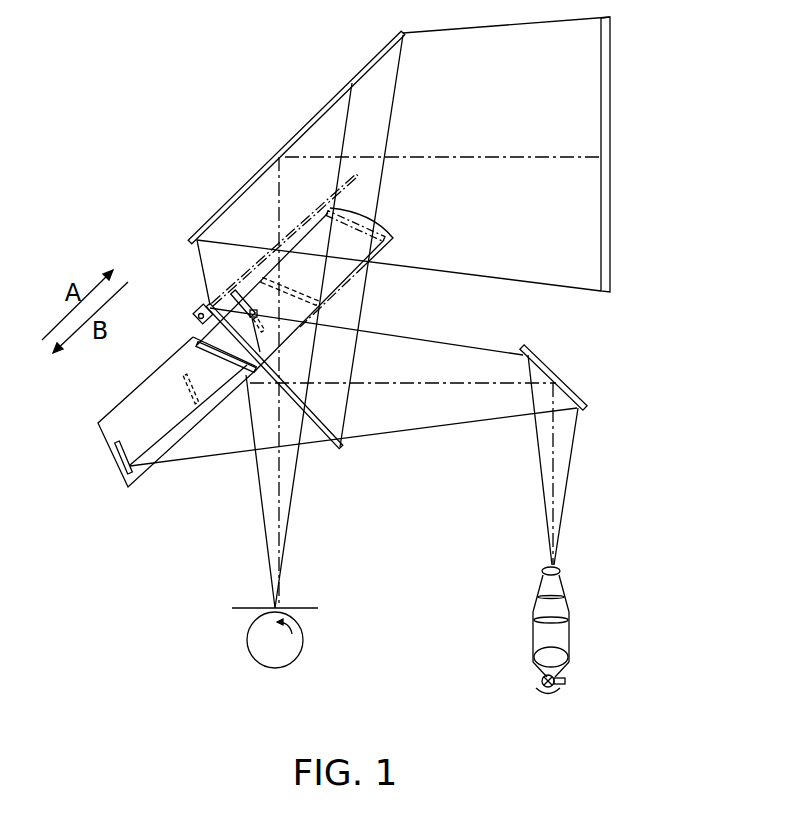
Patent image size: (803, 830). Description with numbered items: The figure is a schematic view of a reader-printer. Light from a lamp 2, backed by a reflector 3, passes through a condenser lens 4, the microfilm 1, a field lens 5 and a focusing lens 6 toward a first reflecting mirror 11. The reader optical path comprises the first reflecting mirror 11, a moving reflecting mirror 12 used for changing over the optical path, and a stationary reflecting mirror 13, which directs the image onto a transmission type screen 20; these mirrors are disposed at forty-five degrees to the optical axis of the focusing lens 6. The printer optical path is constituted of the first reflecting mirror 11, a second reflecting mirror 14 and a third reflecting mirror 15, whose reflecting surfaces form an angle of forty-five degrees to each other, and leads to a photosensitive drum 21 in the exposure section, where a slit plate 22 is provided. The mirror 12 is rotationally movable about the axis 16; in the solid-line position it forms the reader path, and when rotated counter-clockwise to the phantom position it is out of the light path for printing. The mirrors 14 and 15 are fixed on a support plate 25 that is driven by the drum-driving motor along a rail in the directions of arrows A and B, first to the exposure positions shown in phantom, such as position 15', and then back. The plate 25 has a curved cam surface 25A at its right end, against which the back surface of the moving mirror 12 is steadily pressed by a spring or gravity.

The microfilm 1 is at (556, 597).
The lamp 2 is at (567, 681).
The reflector 3 is at (550, 693).
The condenser lens 4 is at (556, 657).
The field lens 5 is at (560, 627).
The focusing lens 6 is at (562, 570).
The first reflecting mirror 11 is at (547, 367).
The moving reflecting mirror 12 is at (343, 452).
The stationary reflecting mirror 13 is at (342, 98).
The second reflecting mirror 14 is at (262, 282).
The third reflecting mirror 15 is at (189, 356).
The exposure position of third reflecting mirror 15' is at (380, 214).
The axis 16 is at (199, 308).
The transmission type screen 20 is at (613, 78).
The photosensitive drum 21 is at (292, 652).
The slit plate 22 is at (318, 610).
The support plate 25 is at (105, 412).
The curved cam surface 25A is at (205, 338).